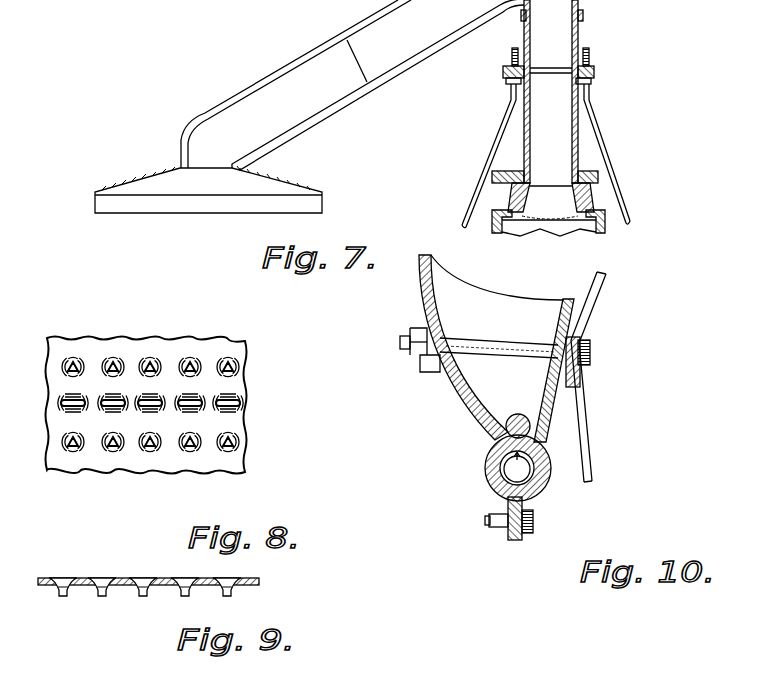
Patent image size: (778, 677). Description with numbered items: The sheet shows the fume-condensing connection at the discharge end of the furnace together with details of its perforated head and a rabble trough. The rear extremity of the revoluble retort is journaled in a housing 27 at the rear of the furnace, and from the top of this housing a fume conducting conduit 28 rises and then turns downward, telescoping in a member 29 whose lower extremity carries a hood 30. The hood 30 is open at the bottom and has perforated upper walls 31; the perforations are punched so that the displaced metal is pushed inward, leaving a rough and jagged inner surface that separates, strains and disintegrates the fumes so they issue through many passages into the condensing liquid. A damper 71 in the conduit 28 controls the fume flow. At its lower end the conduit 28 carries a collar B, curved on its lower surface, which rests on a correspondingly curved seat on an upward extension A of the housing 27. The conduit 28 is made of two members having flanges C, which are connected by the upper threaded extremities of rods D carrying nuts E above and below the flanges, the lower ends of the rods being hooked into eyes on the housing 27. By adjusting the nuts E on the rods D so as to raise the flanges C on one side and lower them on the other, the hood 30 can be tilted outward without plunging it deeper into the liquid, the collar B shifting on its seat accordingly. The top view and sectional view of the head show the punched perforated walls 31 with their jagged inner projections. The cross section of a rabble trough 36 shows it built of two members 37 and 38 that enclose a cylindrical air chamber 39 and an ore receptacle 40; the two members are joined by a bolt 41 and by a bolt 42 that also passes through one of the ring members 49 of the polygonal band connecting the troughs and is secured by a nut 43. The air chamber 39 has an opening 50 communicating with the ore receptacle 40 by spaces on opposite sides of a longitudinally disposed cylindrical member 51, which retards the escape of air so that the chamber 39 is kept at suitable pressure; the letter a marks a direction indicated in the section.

In FIG. 7, the housing 27 is at (604, 226).
In FIG. 7, the fume conducting conduit 28 is at (578, 125).
In FIG. 7, the telescoping member 29 is at (302, 62).
In FIG. 7, the hood 30 is at (378, 85).
In FIG. 7, the perforated upper walls 31 is at (293, 182).
In FIG. 8, the perforated upper walls 31 is at (163, 343).
In FIG. 9, the perforated upper walls 31 is at (148, 587).
In FIG. 7, the damper 71 is at (553, 70).
In FIG. 7, the upward extension of the housing A is at (590, 200).
In FIG. 7, the collar B is at (600, 172).
In FIG. 7, the flange C is at (503, 72).
In FIG. 7, the rod D is at (485, 183).
In FIG. 7, the nut E is at (512, 54).
In FIG. 10, the rabble trough 36 is at (491, 347).
In FIG. 10, the trough member 37 is at (443, 377).
In FIG. 10, the trough member 38 is at (555, 410).
In FIG. 10, the air chamber 39 is at (540, 478).
In FIG. 10, the ore receptacle 40 is at (515, 410).
In FIG. 10, the bolt 41 is at (534, 521).
In FIG. 10, the bolt 42 is at (590, 352).
In FIG. 10, the nut 43 is at (410, 340).
In FIG. 10, the ring member 49 is at (602, 298).
In FIG. 10, the opening 50 is at (530, 440).
In FIG. 10, the longitudinally disposed member 51 is at (483, 433).
In FIG. 10, the direction of movement a is at (500, 418).